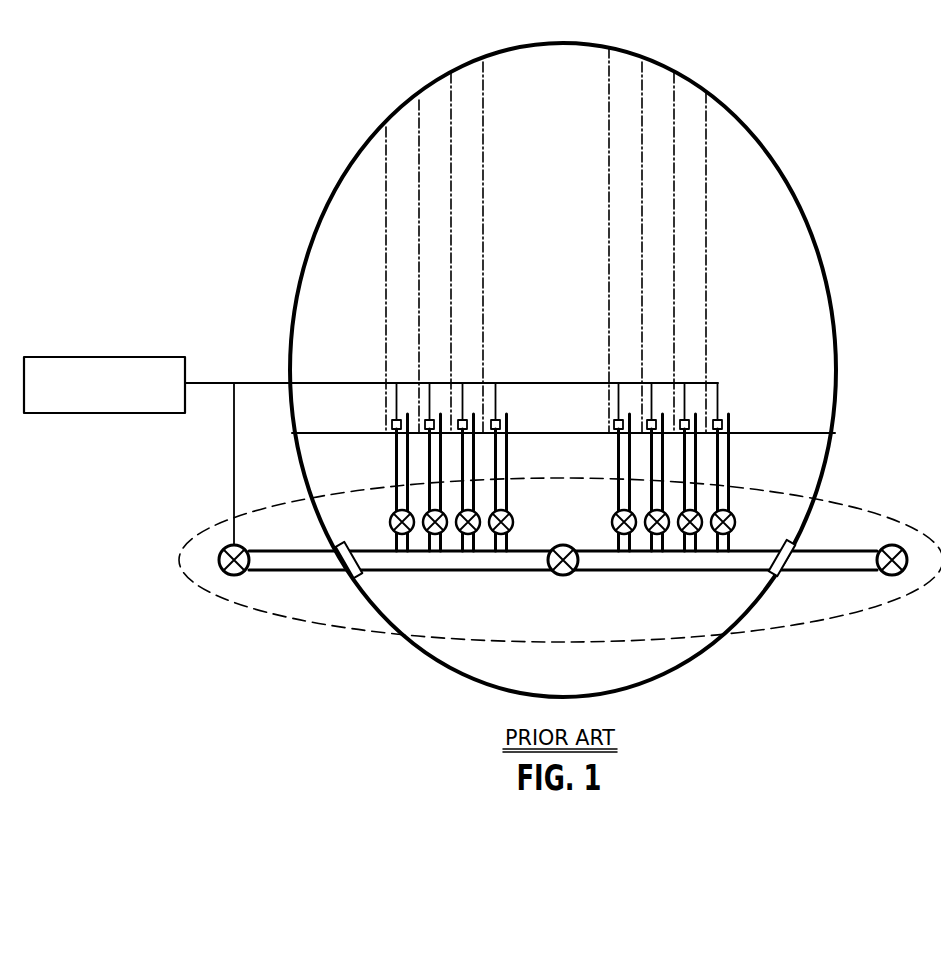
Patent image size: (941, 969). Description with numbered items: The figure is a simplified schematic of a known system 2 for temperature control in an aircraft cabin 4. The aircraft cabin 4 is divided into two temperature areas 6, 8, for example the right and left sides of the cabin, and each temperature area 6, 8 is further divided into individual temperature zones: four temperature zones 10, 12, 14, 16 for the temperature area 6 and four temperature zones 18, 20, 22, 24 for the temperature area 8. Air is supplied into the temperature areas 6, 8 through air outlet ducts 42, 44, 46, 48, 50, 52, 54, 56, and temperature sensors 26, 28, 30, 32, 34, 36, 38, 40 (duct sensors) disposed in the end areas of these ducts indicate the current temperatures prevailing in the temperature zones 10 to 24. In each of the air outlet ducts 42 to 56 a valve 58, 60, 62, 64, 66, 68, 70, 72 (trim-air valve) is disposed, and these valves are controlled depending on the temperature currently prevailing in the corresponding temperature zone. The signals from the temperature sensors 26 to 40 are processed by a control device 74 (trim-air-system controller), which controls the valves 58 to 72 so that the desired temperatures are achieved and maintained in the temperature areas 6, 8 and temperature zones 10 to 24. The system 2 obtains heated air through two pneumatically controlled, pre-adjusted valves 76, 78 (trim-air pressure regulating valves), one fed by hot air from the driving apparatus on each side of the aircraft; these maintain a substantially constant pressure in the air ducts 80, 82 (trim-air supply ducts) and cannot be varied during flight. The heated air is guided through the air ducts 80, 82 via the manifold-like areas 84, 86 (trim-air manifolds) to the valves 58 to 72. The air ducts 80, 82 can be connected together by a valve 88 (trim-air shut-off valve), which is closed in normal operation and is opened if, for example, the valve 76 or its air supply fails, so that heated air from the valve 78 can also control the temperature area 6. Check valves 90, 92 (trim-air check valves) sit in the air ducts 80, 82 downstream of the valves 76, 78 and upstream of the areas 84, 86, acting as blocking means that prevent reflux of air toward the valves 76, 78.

The system 2 is at (876, 512).
The aircraft cabin 4 is at (748, 148).
The temperature area 6 is at (347, 232).
The temperature area 8 is at (743, 200).
The temperature zone 10 is at (396, 213).
The temperature zone 12 is at (425, 192).
The temperature zone 14 is at (458, 165).
The temperature zone 16 is at (536, 141).
The temperature zone 18 is at (617, 141).
The temperature zone 20 is at (647, 161).
The temperature zone 22 is at (681, 180).
The temperature zone 24 is at (719, 185).
The temperature sensor 26 is at (393, 429).
The temperature sensor 28 is at (429, 420).
The temperature sensor 30 is at (464, 420).
The temperature sensor 32 is at (500, 422).
The temperature sensor 34 is at (614, 422).
The temperature sensor 36 is at (651, 420).
The temperature sensor 38 is at (686, 420).
The temperature sensor 40 is at (720, 420).
The air outlet duct 42 is at (397, 468).
The air outlet duct 44 is at (429, 487).
The air outlet duct 46 is at (468, 457).
The air outlet duct 48 is at (503, 493).
The air outlet duct 50 is at (620, 490).
The air outlet duct 52 is at (652, 452).
The air outlet duct 54 is at (694, 452).
The air outlet duct 56 is at (729, 499).
The valve 58 is at (393, 533).
The valve 60 is at (444, 533).
The valve 62 is at (477, 533).
The valve 64 is at (513, 520).
The valve 66 is at (615, 533).
The valve 68 is at (650, 533).
The valve 70 is at (683, 533).
The valve 72 is at (716, 533).
The control device 74 is at (101, 357).
The valve 76 is at (228, 576).
The valve 78 is at (905, 568).
The air duct 80 is at (288, 563).
The air duct 82 is at (837, 560).
The area 84 is at (433, 577).
The area 86 is at (660, 577).
The valve 88 is at (557, 576).
The check valve 90 is at (349, 578).
The check valve 92 is at (780, 576).